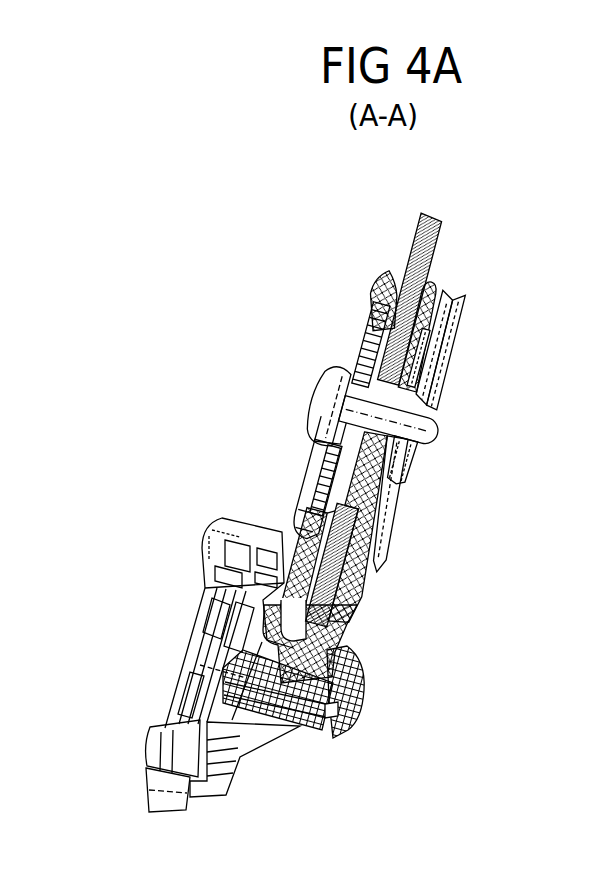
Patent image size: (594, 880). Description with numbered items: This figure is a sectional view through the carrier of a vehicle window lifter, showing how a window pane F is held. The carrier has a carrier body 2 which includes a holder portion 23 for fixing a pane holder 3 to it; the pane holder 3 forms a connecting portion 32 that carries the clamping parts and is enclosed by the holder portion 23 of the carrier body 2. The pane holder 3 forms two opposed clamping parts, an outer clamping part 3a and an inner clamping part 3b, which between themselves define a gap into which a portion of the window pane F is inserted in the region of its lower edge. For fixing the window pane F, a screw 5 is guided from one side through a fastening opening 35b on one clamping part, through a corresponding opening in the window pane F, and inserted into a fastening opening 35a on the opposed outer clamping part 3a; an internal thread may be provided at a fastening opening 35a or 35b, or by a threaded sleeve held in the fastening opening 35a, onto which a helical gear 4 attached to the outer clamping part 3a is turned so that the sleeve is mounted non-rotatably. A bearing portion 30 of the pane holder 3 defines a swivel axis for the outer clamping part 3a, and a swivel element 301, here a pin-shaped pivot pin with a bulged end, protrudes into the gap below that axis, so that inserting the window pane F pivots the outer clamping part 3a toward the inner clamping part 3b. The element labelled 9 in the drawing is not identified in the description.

The window pane F is at (447, 223).
The carrier body 2 is at (178, 568).
The pane holder 3 is at (401, 329).
The outer clamping part 3a is at (415, 378).
The inner clamping part 3b is at (350, 320).
The helical gear 4 is at (392, 528).
The screw 5 is at (325, 395).
The housing portion 9 is at (297, 515).
The holder portion 23 is at (296, 735).
The bearing portion 30 is at (370, 583).
The swivel element 301 is at (357, 622).
The connecting portion 32 is at (357, 695).
The fastening opening 35a is at (413, 462).
The fastening opening 35b is at (320, 420).